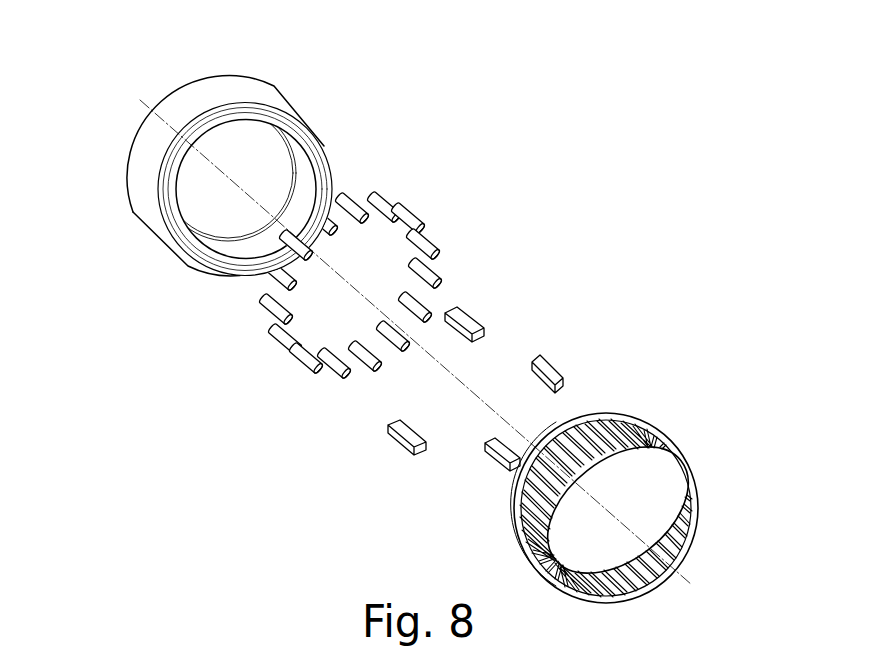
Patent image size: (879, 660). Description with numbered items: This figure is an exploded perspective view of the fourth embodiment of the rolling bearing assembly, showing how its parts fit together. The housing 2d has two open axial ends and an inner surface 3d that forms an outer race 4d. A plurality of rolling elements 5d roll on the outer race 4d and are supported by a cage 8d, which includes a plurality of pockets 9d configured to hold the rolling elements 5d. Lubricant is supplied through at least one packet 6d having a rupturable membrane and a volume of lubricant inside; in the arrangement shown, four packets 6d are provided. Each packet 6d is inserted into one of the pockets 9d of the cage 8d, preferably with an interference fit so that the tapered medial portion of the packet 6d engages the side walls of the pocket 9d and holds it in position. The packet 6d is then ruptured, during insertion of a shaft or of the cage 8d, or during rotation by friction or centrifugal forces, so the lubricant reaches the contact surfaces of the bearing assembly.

The housing 2d is at (228, 165).
The inner surface 3d is at (300, 187).
The outer race 4d is at (302, 148).
The rolling elements 5d is at (427, 243).
The packet 6d is at (548, 367).
The cage 8d is at (641, 478).
The pockets 9d is at (667, 523).